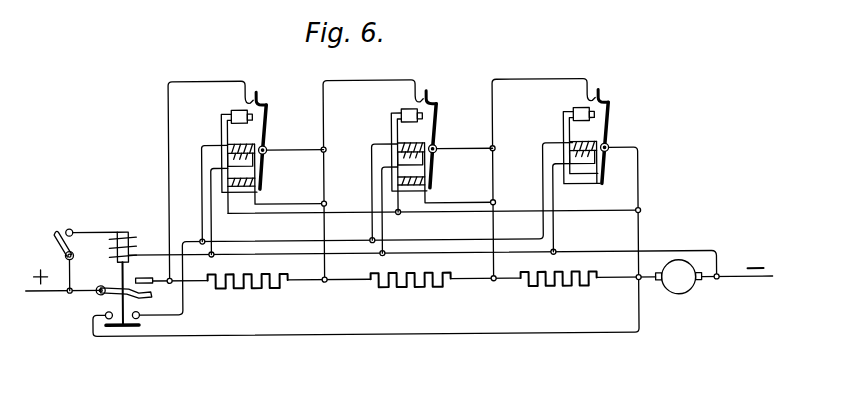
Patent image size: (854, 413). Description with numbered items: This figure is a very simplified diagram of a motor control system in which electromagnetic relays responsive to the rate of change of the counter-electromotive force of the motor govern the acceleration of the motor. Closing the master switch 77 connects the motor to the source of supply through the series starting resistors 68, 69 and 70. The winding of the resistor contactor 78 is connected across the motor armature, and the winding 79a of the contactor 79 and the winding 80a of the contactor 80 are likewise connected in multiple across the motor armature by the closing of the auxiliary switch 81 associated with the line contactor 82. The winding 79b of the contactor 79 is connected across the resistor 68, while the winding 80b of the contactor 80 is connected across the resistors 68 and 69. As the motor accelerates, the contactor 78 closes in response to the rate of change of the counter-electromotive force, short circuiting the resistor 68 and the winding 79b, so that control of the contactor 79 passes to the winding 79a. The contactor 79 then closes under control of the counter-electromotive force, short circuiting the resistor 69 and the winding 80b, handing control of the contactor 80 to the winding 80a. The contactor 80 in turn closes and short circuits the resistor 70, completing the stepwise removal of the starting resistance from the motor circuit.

The resistor 68 is at (559, 289).
The resistor 69 is at (411, 292).
The resistor 70 is at (248, 294).
The master switch 77 is at (63, 251).
The resistor contactor 78 is at (622, 136).
The contactor 79 is at (459, 139).
The winding of contactor 79 79a is at (408, 146).
The winding of contactor 79 79b is at (408, 191).
The contactor 80 is at (290, 141).
The winding of contactor 80 80a is at (238, 146).
The winding of contactor 80 80b is at (238, 191).
The auxiliary switch 81 is at (124, 326).
The line contactor 82 is at (124, 281).